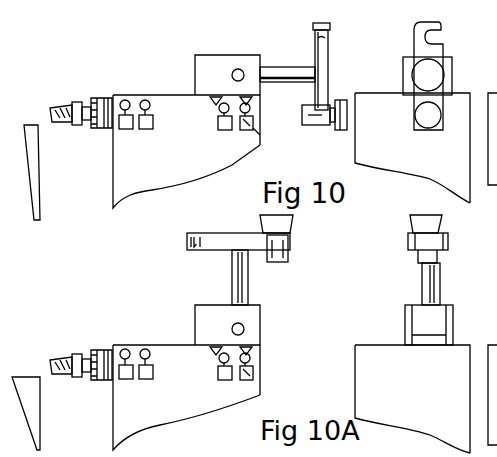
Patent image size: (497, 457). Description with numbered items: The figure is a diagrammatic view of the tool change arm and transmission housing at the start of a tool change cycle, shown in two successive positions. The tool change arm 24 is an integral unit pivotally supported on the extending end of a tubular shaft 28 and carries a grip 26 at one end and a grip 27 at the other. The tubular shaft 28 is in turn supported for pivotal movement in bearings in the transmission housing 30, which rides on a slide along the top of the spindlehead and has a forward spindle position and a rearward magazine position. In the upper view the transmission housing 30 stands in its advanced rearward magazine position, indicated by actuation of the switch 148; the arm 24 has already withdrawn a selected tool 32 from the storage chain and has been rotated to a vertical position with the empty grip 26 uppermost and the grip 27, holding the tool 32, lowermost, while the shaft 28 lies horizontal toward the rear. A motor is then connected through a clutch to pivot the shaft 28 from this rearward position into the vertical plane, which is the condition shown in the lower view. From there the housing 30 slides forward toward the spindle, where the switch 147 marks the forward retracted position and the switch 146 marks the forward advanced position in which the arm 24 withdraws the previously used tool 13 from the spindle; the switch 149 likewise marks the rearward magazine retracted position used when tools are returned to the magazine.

In FIG. 10, the tool 13 is at (62, 124).
In FIG. 10A, the tool 13 is at (60, 378).
In FIG. 10, the tool change arm 24 is at (323, 73).
In FIG. 10A, the tool change arm 24 is at (215, 241).
In FIG. 10, the grip 26 is at (327, 40).
In FIG. 10A, the grip 26 is at (194, 245).
In FIG. 10, the grip 27 is at (325, 127).
In FIG. 10, the tubular shaft 28 is at (297, 50).
In FIG. 10A, the tubular shaft 28 is at (233, 292).
In FIG. 10, the transmission housing 30 is at (200, 70).
In FIG. 10A, the transmission housing 30 is at (262, 331).
In FIG. 10, the tool 32 is at (292, 113).
In FIG. 10, the switch 146 is at (128, 129).
In FIG. 10, the switch 147 is at (153, 129).
In FIG. 10A, the switch 147 is at (148, 381).
In FIG. 10, the switch 148 is at (261, 130).
In FIG. 10A, the switch 148 is at (262, 377).
In FIG. 10, the switch 149 is at (222, 130).